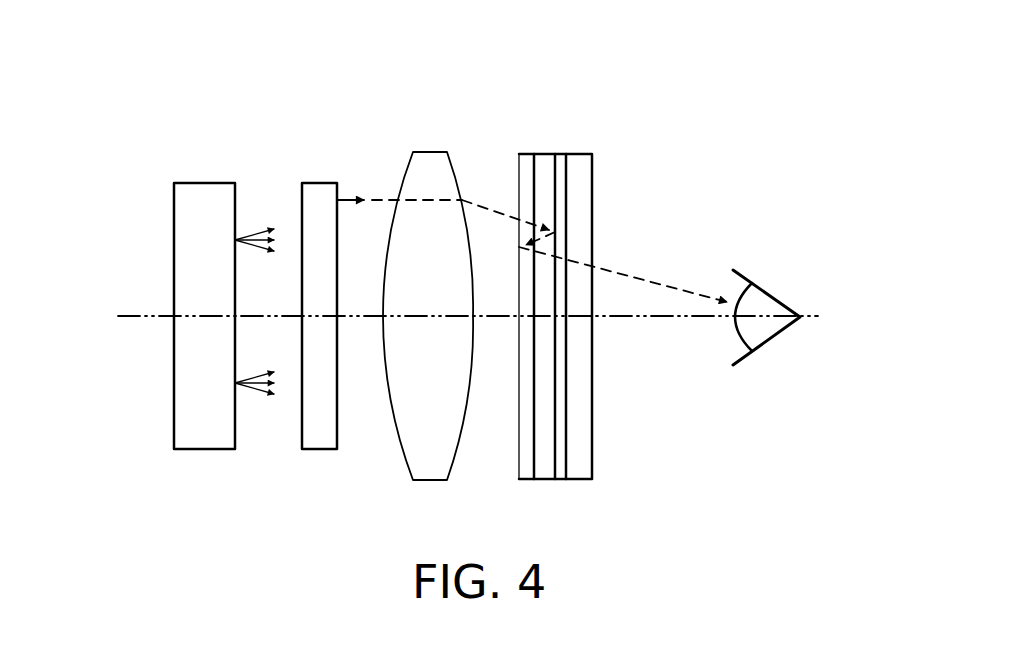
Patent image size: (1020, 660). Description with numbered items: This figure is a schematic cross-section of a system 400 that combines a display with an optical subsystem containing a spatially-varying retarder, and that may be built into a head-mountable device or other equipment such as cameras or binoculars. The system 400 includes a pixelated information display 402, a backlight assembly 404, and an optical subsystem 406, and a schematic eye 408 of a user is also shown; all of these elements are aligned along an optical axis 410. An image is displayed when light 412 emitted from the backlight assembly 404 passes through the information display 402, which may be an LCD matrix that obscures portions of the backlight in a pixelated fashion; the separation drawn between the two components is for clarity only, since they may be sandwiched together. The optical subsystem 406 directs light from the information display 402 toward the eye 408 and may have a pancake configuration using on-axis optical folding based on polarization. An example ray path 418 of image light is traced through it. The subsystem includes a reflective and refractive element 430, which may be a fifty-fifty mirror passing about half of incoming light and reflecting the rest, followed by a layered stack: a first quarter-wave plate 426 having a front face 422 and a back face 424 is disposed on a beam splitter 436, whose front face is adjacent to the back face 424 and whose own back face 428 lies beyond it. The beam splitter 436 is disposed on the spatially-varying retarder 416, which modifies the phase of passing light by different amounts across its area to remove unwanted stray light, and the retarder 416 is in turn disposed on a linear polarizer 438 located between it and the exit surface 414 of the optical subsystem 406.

The system 400 is at (274, 54).
The information display 402 is at (320, 183).
The backlight assembly 404 is at (198, 183).
The optical subsystem 406 is at (405, 93).
The eye 408 is at (745, 272).
The optical axis 410 is at (161, 314).
The light 412 is at (262, 397).
The exit surface 414 is at (596, 413).
The spatially-varying retarder 416 is at (561, 153).
The ray path 418 is at (503, 212).
The front face 422 is at (518, 451).
The back face 424 is at (536, 463).
The first quarter-wave plate 426 is at (526, 153).
The back face 428 is at (556, 458).
The reflective and refractive element 430 is at (400, 457).
The beam splitter 436 is at (541, 153).
The linear polarizer 438 is at (580, 153).